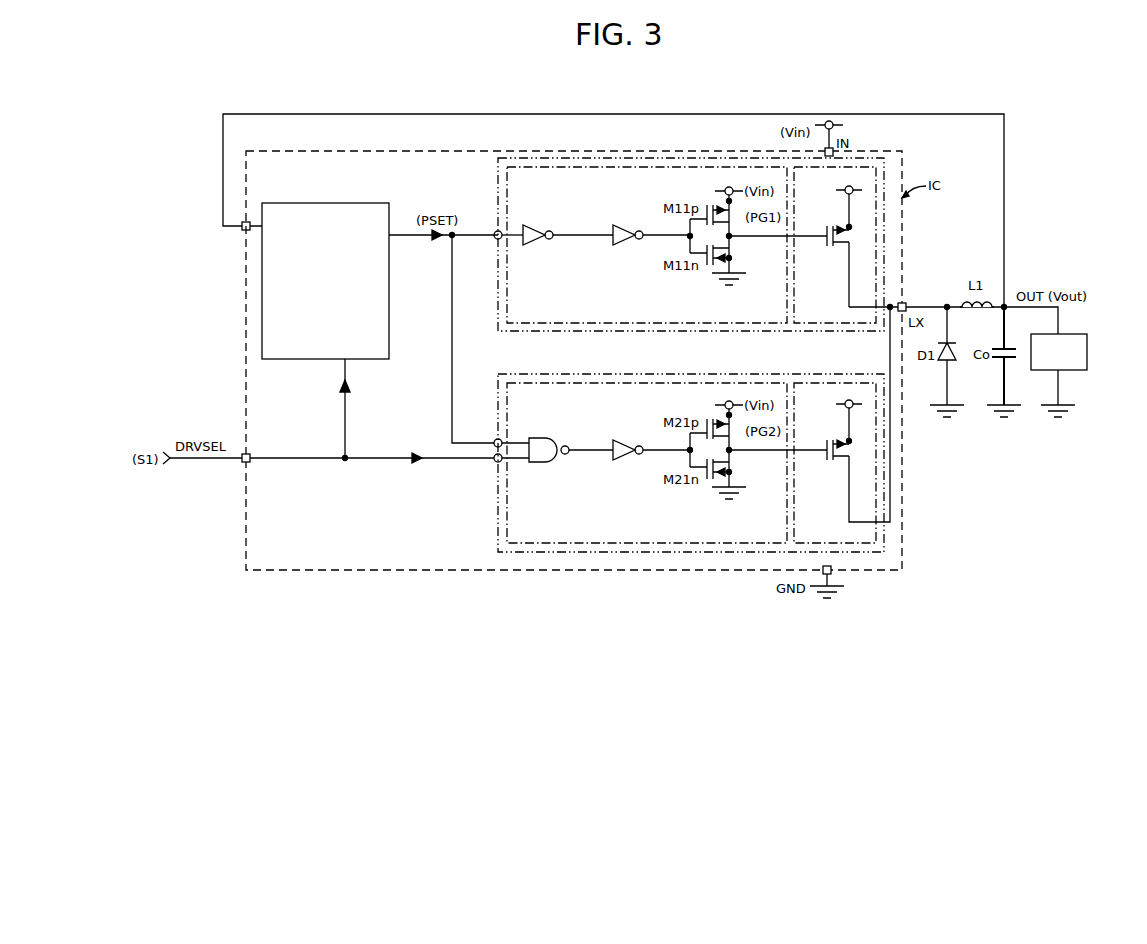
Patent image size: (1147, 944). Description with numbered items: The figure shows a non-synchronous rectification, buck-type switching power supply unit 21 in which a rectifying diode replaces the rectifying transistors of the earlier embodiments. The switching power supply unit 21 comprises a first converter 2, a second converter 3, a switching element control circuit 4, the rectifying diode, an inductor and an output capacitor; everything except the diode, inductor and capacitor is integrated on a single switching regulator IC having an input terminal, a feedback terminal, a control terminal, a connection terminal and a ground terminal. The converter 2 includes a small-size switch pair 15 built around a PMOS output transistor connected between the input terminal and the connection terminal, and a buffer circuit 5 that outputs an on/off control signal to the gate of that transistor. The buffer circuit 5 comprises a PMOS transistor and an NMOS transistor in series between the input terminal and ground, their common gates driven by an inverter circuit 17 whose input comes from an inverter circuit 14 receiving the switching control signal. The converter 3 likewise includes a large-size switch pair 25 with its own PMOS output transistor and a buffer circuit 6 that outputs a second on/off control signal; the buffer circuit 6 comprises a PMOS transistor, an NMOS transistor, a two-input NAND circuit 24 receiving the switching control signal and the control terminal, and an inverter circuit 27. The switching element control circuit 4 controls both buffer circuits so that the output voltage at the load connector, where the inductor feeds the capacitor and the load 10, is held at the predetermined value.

The switching power supply unit 21 is at (931, 108).
The switching element control circuit 4 is at (370, 203).
The converter 2 is at (498, 171).
The buffer circuit 5 is at (707, 167).
The inverter circuit 14 is at (540, 247).
The inverter circuit 17 is at (630, 247).
The switch pair 15 is at (862, 167).
The converter 3 is at (498, 542).
The buffer circuit 6 is at (707, 383).
The NAND circuit 24 is at (545, 463).
The inverter circuit 27 is at (630, 462).
The switch pair 25 is at (862, 383).
The load 10 is at (1074, 372).